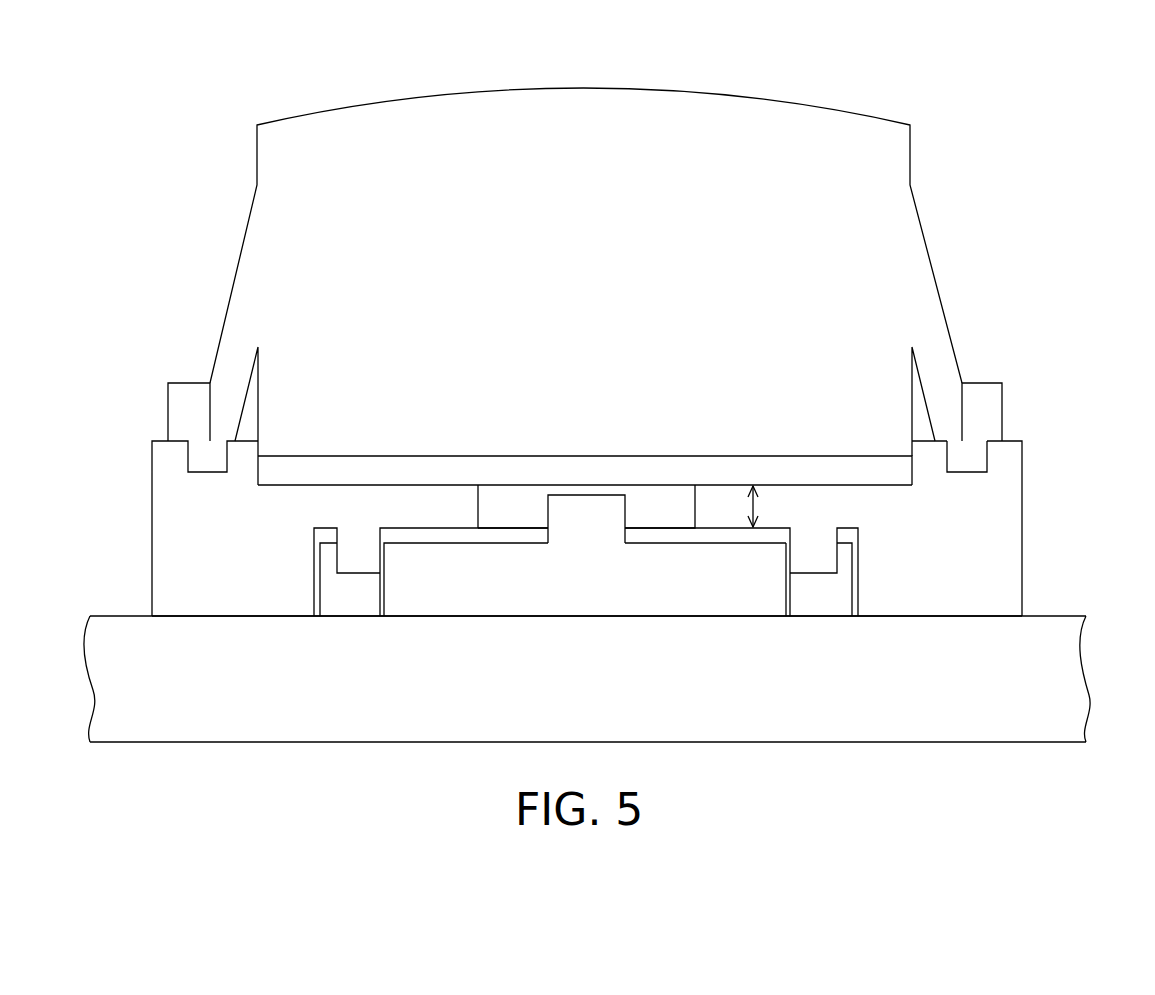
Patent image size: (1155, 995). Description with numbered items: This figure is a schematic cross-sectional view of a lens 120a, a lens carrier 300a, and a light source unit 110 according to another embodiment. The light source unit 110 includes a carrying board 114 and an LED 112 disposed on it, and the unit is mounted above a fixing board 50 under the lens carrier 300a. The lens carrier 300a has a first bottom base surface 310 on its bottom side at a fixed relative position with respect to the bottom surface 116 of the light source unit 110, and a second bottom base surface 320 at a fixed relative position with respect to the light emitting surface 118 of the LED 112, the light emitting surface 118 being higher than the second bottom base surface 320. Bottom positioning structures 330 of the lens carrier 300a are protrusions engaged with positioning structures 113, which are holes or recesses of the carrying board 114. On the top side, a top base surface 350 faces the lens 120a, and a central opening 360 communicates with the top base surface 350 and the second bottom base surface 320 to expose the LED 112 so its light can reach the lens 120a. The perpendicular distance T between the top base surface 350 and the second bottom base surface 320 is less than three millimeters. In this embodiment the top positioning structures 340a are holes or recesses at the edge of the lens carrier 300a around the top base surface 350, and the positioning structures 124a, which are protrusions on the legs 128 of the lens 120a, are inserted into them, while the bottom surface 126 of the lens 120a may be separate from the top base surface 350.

The fixing board 50 is at (1058, 672).
The light source unit 110 is at (718, 786).
The LED 112 is at (590, 528).
The positioning structures 113 is at (339, 597).
The carrying board 114 is at (763, 598).
The bottom surface 116 is at (523, 618).
The light emitting surface 118 is at (597, 492).
The lens 120a is at (812, 122).
The positioning structures 124a is at (973, 460).
The bottom surface 126 is at (378, 484).
The legs 128 is at (236, 352).
The lens carrier 300a is at (1003, 568).
The first bottom base surface 310 is at (253, 618).
The second bottom base surface 320 is at (399, 529).
The bottom positioning structures 330 is at (357, 557).
The top positioning structures 340a is at (949, 457).
The top base surface 350 is at (455, 458).
The central opening 360 is at (482, 499).
The perpendicular distance T is at (755, 507).